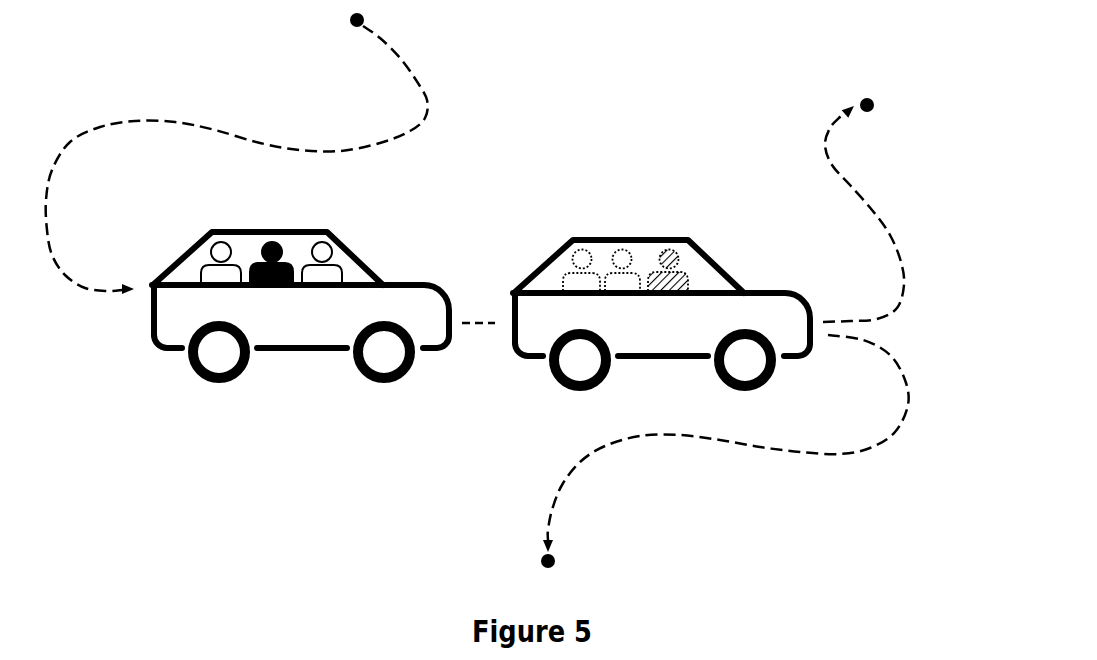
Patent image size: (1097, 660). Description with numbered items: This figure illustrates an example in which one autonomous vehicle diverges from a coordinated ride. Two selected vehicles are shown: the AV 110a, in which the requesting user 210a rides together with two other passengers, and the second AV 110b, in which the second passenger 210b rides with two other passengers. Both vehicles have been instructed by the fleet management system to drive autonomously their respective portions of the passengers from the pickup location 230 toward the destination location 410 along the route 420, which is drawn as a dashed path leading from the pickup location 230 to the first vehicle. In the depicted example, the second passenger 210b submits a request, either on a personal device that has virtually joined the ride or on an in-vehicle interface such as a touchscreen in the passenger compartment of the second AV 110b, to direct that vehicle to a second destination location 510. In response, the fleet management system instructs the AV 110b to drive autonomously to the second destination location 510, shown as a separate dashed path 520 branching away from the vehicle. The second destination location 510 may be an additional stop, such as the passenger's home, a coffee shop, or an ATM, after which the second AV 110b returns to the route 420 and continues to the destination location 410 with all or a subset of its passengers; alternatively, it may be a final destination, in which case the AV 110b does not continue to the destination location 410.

The AV 110a is at (271, 331).
The second AV 110b is at (638, 339).
The requesting user 210a is at (274, 238).
The second passenger 210b is at (682, 255).
The pickup location 230 is at (347, 20).
The destination location 410 is at (562, 557).
The route 420 is at (193, 135).
The second destination location 510 is at (880, 100).
The second vehicle route 520 is at (873, 203).